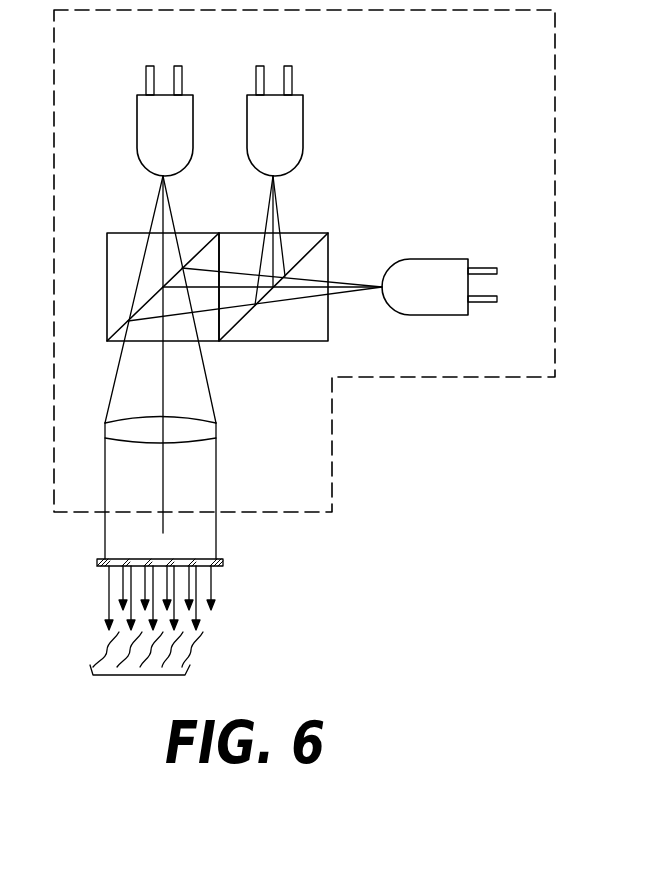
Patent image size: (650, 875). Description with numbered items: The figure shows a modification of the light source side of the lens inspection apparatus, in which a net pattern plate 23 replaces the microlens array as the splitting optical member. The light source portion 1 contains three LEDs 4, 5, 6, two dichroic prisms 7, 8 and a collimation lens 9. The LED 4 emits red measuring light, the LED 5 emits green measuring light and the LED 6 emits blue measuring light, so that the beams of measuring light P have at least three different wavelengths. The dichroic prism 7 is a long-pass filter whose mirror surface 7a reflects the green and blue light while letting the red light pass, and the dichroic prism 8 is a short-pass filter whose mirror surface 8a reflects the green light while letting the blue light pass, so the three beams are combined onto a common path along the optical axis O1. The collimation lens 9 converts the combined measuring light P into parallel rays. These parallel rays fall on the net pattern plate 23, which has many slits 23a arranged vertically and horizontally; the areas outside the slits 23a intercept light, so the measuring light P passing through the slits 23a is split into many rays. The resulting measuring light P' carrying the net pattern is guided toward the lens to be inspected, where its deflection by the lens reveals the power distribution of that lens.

The light source portion 1 is at (557, 219).
The LED 4 is at (153, 138).
The LED 5 is at (282, 133).
The LED 6 is at (425, 277).
The dichroic prism 7 is at (118, 282).
The mirror surface 7a is at (203, 250).
The dichroic prism 8 is at (318, 332).
The mirror surface 8a is at (308, 253).
The collimation lens 9 is at (200, 432).
The optical axis O1 is at (163, 374).
The measuring light P is at (243, 367).
The net pattern plate 23 is at (223, 563).
The slits 23a is at (154, 558).
The measuring light of the net pattern P' is at (152, 636).